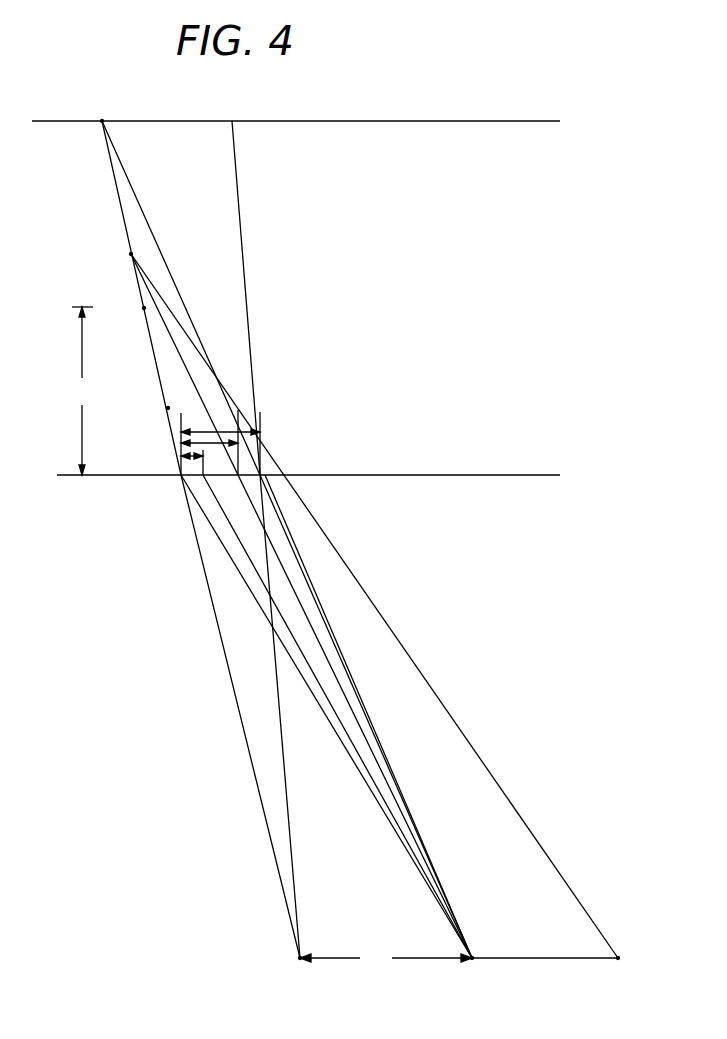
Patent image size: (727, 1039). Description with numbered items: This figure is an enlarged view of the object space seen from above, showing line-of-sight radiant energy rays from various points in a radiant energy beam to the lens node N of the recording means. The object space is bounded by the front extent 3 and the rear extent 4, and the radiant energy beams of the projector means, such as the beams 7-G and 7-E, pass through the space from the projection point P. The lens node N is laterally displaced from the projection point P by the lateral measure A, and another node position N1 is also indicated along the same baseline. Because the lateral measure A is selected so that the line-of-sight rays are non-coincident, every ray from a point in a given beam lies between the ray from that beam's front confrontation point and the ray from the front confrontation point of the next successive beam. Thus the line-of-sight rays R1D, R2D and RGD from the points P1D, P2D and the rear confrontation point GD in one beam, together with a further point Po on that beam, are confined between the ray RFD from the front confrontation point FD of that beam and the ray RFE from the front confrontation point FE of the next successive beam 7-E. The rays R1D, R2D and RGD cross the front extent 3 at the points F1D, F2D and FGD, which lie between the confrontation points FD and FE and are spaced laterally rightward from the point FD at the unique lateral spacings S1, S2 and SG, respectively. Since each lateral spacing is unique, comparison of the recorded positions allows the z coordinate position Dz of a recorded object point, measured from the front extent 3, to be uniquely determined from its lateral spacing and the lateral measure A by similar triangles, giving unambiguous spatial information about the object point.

The rear extent 4 is at (391, 123).
The front extent 3 is at (458, 477).
The radiant energy beam 7-G is at (120, 202).
The radiant energy beam 7-E is at (243, 233).
The rear confrontation point GD is at (101, 108).
The line-of-sight ray RGD is at (119, 160).
The line-of-sight ray RFE is at (336, 618).
The point in beam P2D is at (131, 254).
The point P_o Po is at (143, 308).
The line-of-sight ray R2D is at (178, 347).
The point in beam P1D is at (167, 406).
The z coordinate position Dz is at (80, 391).
The lateral spacing SG is at (236, 427).
The lateral spacing S2 is at (195, 443).
The lateral spacing S1 is at (186, 456).
The front confrontation point FD is at (178, 480).
The crossing point F1D is at (203, 478).
The crossing point F2D is at (238, 476).
The crossing point FGD is at (262, 437).
The front confrontation point FE is at (265, 476).
The line-of-sight ray RFD is at (245, 584).
The line-of-sight ray R1D is at (282, 621).
The projection point P is at (298, 972).
The lens node N is at (470, 972).
The point N_1 N1 is at (384, 622).
The lateral measure A is at (386, 961).